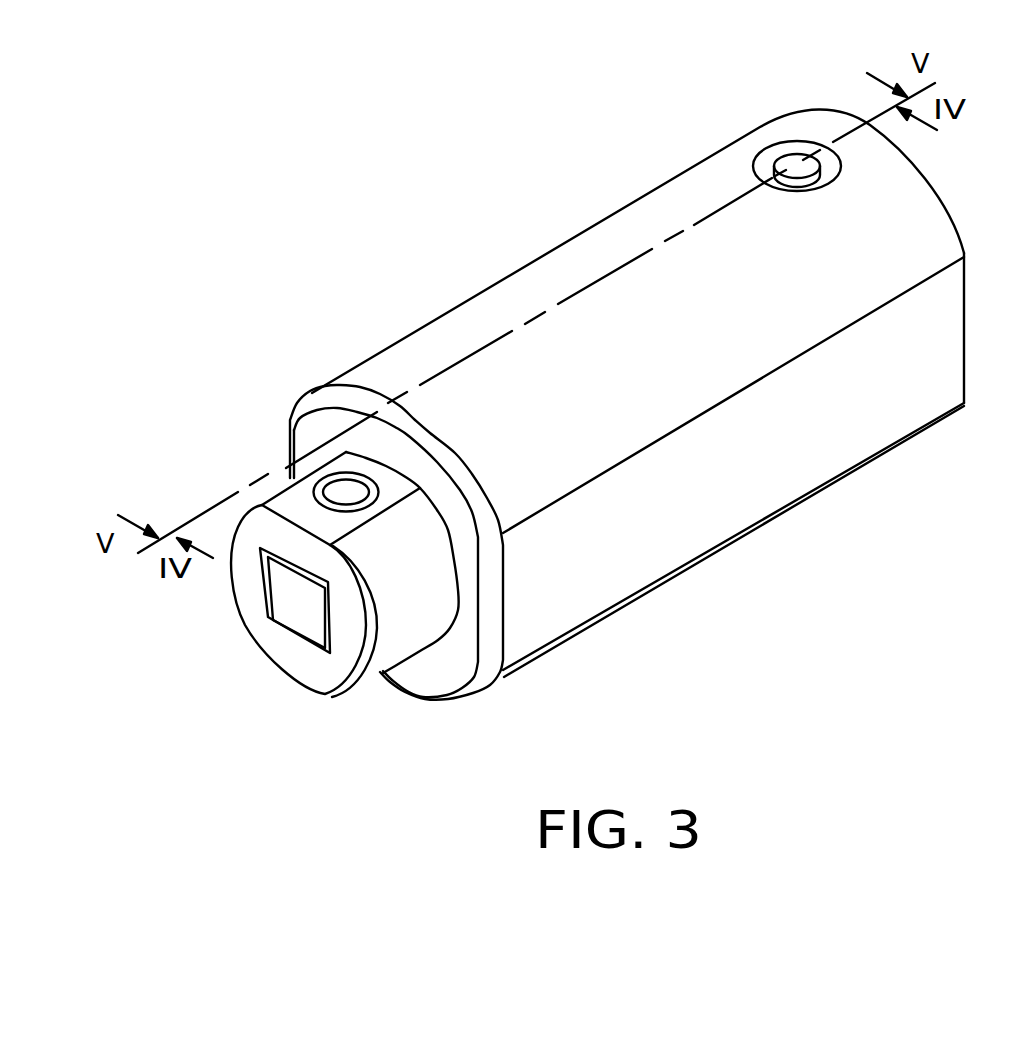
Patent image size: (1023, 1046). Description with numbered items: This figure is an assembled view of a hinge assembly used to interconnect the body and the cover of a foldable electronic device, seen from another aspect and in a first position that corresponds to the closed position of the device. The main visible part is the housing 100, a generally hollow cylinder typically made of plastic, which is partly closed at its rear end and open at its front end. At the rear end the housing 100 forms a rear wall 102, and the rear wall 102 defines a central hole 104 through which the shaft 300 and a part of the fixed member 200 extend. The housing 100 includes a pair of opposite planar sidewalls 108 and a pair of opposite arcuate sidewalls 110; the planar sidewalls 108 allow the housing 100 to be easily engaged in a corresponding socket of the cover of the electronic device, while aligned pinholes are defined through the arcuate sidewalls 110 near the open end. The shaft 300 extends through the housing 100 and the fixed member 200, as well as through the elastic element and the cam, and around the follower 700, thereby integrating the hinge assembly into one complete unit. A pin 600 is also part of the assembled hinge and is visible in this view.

The housing 100 is at (638, 369).
The rear wall 102 is at (459, 581).
The central hole 104 is at (458, 563).
The planar sidewalls 108 is at (767, 478).
The arcuate sidewalls 110 is at (638, 232).
The fixed member 200 is at (291, 526).
The shaft 300 is at (297, 607).
The pin 600 is at (347, 490).
The follower 700 is at (790, 157).